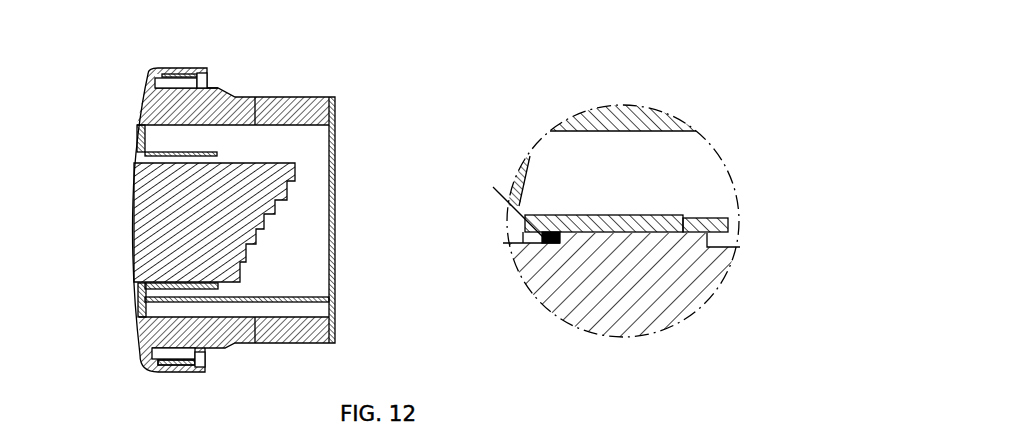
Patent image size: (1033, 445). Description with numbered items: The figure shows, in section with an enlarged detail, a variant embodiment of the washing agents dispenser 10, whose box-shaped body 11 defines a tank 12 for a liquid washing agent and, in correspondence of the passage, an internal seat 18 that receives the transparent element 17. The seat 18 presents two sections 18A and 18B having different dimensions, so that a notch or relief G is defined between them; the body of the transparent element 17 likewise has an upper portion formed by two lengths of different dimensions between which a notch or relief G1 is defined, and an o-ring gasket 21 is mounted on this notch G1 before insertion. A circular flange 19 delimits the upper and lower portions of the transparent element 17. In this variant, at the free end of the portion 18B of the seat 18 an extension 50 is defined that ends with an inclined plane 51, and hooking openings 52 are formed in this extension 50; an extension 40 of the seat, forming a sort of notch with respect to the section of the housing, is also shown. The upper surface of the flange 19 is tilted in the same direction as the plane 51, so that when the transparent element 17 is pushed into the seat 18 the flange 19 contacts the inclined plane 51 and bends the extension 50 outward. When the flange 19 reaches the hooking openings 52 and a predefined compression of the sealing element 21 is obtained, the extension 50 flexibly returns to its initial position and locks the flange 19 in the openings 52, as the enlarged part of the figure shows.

The washing agents dispenser 10 is at (351, 64).
The box-shaped body 11 is at (586, 117).
The tank 12 is at (320, 279).
The transparent element 17 is at (130, 244).
The internal seat 18 is at (178, 151).
The first section of the seat 18A is at (510, 242).
The second section of the seat 18B is at (623, 235).
The circular flange 19 is at (697, 228).
The o-ring gasket 21 is at (541, 244).
The extension 40 is at (223, 152).
The extension 50 is at (716, 209).
The inclined plane 51 is at (724, 233).
The hooking openings 52 is at (688, 218).
The notch or relief G is at (540, 242).
The notch or relief G1 is at (549, 245).